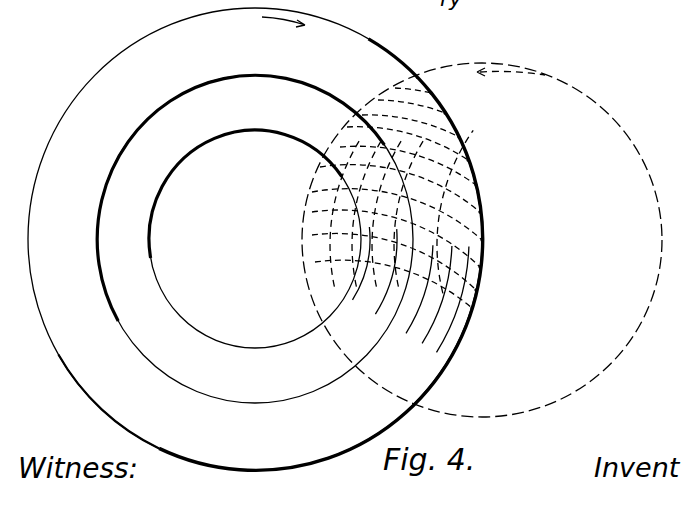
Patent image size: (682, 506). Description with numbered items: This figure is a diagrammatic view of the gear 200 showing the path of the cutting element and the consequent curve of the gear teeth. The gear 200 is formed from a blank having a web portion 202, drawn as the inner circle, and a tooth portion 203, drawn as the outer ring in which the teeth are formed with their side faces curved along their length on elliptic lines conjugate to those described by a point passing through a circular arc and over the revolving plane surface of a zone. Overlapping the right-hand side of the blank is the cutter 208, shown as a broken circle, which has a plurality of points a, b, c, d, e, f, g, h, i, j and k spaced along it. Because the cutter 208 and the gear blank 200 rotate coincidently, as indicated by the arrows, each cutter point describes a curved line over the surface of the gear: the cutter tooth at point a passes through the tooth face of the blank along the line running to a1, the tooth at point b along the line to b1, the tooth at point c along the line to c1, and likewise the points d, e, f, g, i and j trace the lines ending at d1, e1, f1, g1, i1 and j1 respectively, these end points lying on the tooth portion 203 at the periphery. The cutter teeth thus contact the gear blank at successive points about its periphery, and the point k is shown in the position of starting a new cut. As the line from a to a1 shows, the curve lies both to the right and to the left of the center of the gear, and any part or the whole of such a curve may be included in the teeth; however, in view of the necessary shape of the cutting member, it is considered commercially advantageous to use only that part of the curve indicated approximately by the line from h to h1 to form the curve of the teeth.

The gear 200 is at (380, 53).
The web portion 202 is at (158, 173).
The tooth portion 203 is at (323, 40).
The cutter 208 is at (530, 78).
The point a on the cutter a is at (315, 262).
The point b on the cutter b is at (312, 235).
The point c on the cutter c is at (312, 212).
The point d on the cutter d is at (312, 192).
The point e on the cutter e is at (320, 167).
The point f on the cutter f is at (340, 147).
The point g on the cutter g is at (347, 127).
The point h on the cutter h is at (362, 115).
The point i on the cutter i is at (378, 100).
The point j on the cutter j is at (395, 88).
The point k on the cutter k is at (417, 78).
The end point a' of line a—a' a1 is at (472, 308).
The end point b' of line b—b' b1 is at (476, 290).
The end point c' of line c—c' c1 is at (480, 267).
The end point d' of line d—d' d1 is at (482, 240).
The end point e' of line e—e' e1 is at (480, 212).
The end point f' of line f—f' f1 is at (476, 185).
The end point g' of line g—g' g1 is at (468, 160).
The end point h' of line h—h' h1 is at (459, 137).
The end point i' of line i—i' i1 is at (445, 113).
The end point j' of line j—j' j1 is at (432, 93).